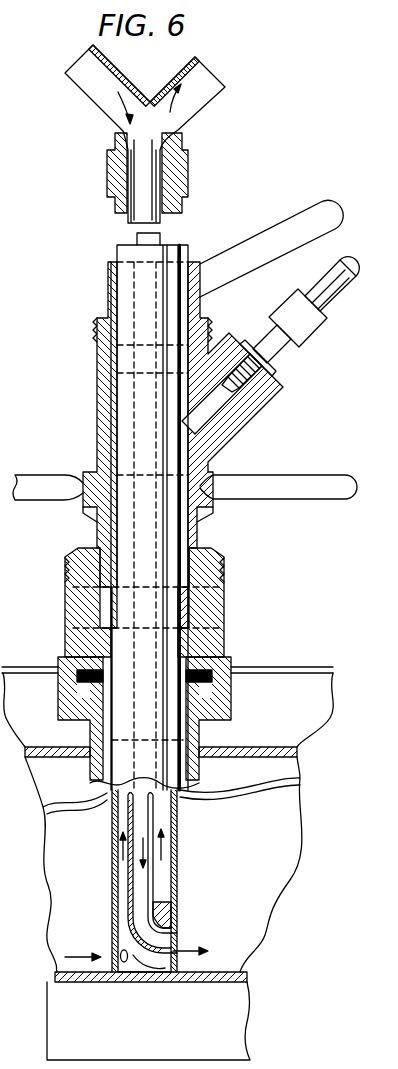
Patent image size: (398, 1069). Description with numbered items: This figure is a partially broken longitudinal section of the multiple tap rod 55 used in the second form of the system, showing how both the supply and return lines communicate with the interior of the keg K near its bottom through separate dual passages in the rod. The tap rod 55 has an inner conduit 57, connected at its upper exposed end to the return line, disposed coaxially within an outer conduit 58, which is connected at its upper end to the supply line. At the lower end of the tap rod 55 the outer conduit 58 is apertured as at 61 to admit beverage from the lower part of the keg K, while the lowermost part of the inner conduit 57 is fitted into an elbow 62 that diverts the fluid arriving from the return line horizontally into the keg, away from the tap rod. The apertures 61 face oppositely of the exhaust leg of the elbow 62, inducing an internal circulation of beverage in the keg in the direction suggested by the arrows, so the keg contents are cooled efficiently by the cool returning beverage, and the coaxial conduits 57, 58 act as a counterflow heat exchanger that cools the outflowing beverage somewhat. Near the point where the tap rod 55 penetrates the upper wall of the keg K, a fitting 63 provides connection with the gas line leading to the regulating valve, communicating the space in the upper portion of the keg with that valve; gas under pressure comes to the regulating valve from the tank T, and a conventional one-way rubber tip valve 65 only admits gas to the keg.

The tap rod 55 is at (117, 527).
The inner conduit 57 is at (97, 110).
The outer conduit 58 is at (225, 89).
The apertures 61 is at (115, 953).
The elbow 62 is at (172, 930).
The fitting 63 is at (281, 360).
The one-way rubber tip valve 65 is at (240, 398).
The keg K is at (280, 667).
The tank T is at (0, 968).